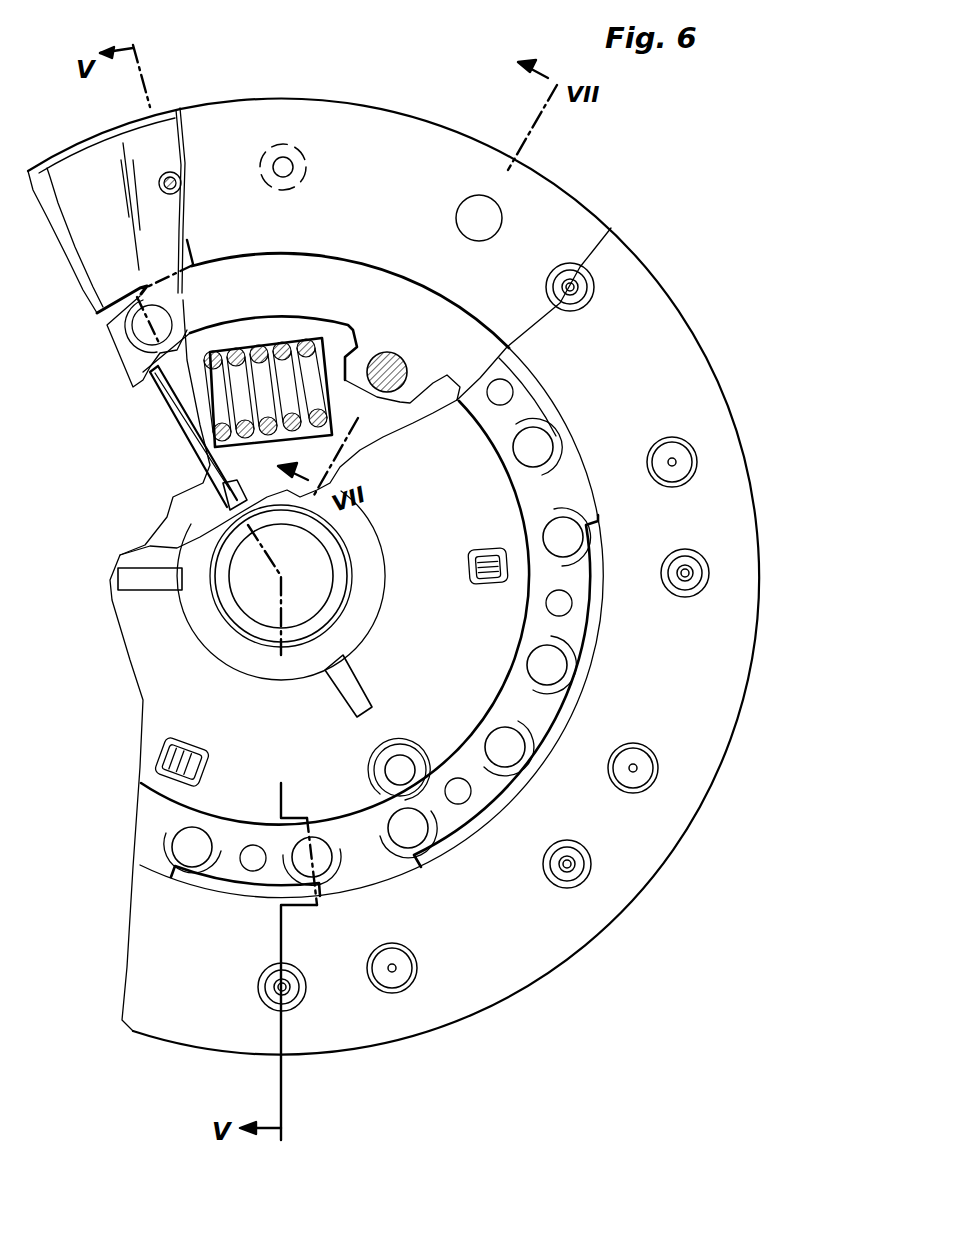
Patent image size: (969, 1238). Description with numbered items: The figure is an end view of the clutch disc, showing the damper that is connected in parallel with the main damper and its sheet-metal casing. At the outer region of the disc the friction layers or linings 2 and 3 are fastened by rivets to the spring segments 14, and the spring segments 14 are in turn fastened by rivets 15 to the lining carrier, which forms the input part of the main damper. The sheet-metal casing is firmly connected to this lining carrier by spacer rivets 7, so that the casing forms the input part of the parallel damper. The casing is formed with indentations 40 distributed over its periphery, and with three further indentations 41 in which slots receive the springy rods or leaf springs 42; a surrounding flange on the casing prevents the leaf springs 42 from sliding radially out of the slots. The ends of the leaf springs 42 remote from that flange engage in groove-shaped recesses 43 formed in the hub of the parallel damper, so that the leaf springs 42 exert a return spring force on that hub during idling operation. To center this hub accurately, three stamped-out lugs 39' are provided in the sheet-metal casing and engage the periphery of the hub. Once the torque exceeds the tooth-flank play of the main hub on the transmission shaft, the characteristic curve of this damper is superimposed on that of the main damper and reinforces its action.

The friction lining 2 is at (640, 290).
The friction lining 3 is at (40, 170).
The spacer rivet 7 is at (395, 365).
The spring segment 14 is at (560, 490).
The rivet 15 is at (540, 445).
The stamped-out lug 39' is at (232, 651).
The indentation 40 is at (420, 767).
The indentation 41 is at (503, 584).
The leaf spring 42 is at (185, 437).
The groove-shaped recess 43 is at (225, 500).